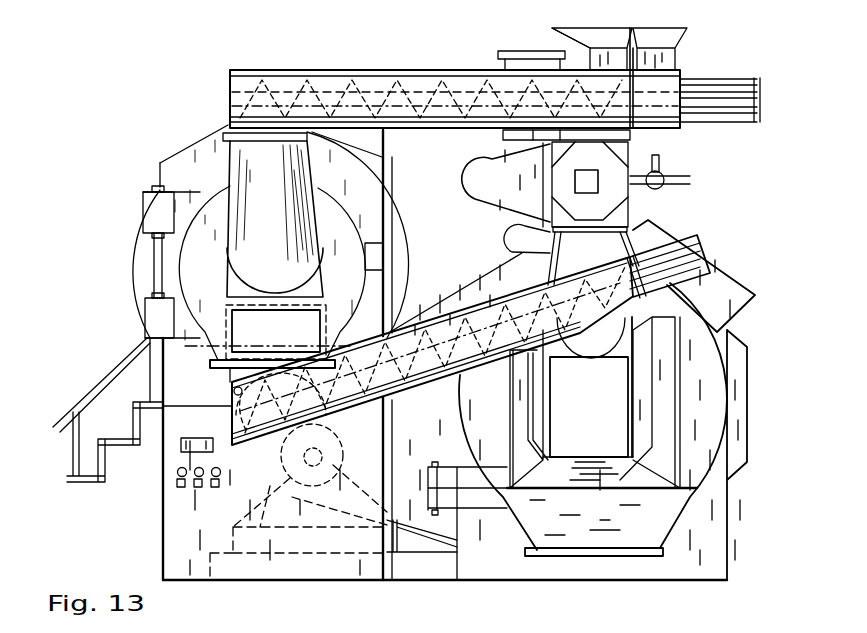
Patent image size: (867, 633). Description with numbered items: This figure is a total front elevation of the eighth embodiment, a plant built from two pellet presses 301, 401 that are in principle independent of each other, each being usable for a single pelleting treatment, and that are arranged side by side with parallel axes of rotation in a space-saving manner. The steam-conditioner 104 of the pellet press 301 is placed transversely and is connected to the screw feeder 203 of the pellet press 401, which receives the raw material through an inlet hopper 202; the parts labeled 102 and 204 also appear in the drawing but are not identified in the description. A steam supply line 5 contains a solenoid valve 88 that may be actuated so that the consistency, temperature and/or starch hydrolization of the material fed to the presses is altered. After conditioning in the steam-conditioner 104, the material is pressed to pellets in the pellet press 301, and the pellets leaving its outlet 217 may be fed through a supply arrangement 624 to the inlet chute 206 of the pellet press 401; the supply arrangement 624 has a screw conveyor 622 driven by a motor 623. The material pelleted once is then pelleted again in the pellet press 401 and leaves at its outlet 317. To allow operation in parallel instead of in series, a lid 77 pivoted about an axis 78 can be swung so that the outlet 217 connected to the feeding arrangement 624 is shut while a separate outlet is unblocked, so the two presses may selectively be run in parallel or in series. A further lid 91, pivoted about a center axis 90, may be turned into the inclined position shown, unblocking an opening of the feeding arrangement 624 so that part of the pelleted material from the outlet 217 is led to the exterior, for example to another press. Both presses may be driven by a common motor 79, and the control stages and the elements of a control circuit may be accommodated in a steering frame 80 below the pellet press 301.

The inlet hopper 202 is at (568, 34).
The screw feeder 203 is at (590, 62).
The hopper 102 is at (670, 36).
The pellet press 301 is at (167, 158).
The steam-conditioner 104 is at (403, 131).
The steam supply line 5 is at (667, 183).
The solenoid valve 88 is at (662, 190).
The discharge chute housing 204 is at (540, 200).
The supply arrangement 624 is at (432, 320).
The motor 623 is at (688, 286).
The lid 77 is at (276, 332).
The axis 78 is at (210, 349).
The inlet chute 206 is at (600, 345).
The outlet 217 is at (201, 434).
The lid 91 is at (336, 429).
The screw conveyor 622 is at (404, 392).
The center axis 90 is at (212, 481).
The steering frame 80 is at (180, 531).
The common motor 79 is at (298, 522).
The outlet 317 is at (587, 560).
The pellet press 401 is at (727, 540).